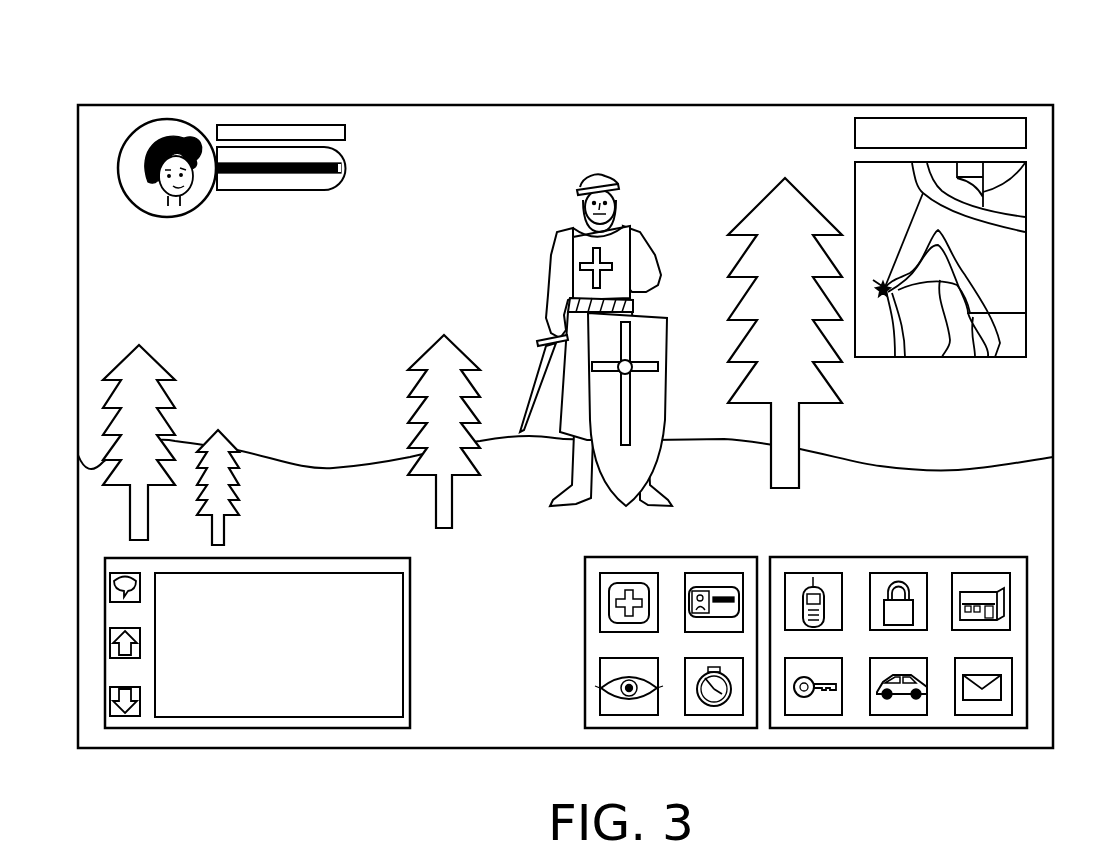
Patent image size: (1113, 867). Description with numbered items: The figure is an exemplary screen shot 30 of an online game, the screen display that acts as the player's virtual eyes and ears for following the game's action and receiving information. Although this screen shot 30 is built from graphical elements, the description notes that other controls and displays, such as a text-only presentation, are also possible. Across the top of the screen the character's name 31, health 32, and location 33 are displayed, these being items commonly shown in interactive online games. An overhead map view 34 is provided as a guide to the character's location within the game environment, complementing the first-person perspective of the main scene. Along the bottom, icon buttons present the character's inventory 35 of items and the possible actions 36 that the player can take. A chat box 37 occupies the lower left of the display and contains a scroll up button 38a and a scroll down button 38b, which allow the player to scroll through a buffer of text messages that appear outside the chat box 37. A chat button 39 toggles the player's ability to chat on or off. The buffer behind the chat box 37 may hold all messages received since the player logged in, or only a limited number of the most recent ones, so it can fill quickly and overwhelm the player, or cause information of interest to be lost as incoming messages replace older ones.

The screen shot 30 is at (52, 91).
The character's name 31 is at (345, 133).
The health 32 is at (345, 182).
The location 33 is at (940, 118).
The overhead map view 34 is at (1028, 258).
The inventory 35 is at (713, 557).
The possible actions 36 is at (936, 557).
The chat box 37 is at (262, 728).
The scroll up button 38a is at (110, 646).
The scroll down button 38b is at (110, 700).
The chat button 39 is at (110, 588).